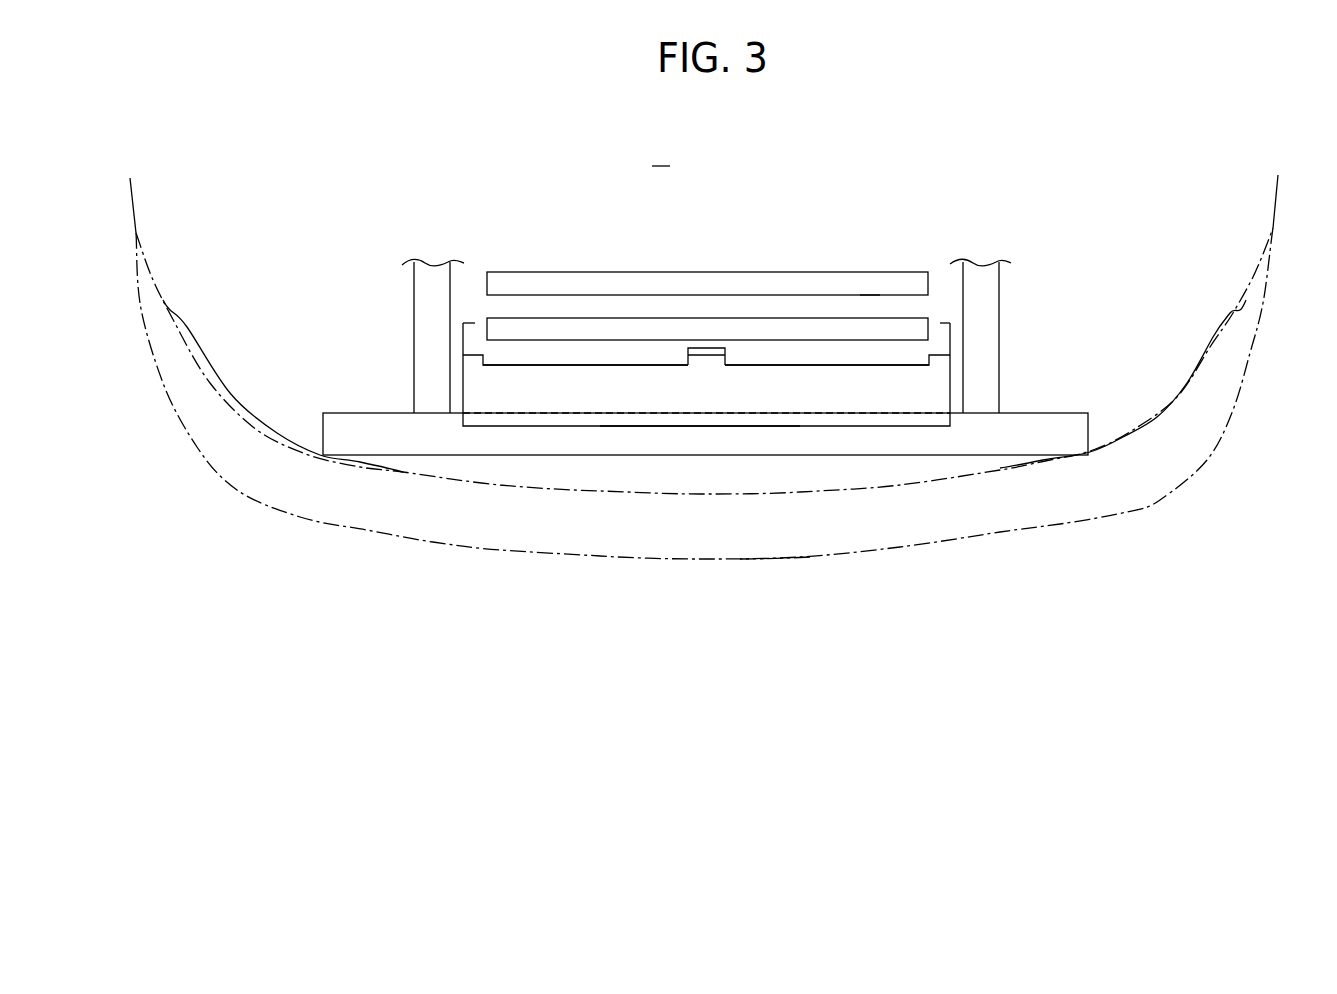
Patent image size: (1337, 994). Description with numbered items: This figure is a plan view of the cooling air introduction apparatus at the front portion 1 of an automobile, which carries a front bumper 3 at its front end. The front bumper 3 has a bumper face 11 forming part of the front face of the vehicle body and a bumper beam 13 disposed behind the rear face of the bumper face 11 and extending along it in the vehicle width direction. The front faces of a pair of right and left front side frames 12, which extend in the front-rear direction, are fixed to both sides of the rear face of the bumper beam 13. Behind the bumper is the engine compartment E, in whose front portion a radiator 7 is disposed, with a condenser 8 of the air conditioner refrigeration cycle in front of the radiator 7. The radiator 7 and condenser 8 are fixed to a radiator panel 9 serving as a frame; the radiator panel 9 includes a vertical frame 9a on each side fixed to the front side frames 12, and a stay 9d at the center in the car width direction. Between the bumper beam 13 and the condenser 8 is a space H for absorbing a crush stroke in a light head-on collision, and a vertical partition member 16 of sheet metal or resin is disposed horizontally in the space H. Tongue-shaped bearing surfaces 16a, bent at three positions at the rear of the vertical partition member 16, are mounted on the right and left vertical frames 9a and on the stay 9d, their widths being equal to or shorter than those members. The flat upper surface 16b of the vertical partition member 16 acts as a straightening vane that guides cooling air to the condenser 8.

The front portion 1 is at (1263, 535).
The front bumper 3 is at (1110, 526).
The radiator 7 is at (813, 285).
The condenser 8 is at (615, 328).
The radiator panel 9 is at (943, 310).
The vertical frame 9a is at (462, 338).
The stay 9d is at (703, 348).
The bumper face 11 is at (810, 557).
The front side frame 12 is at (420, 290).
The bumper beam 13 is at (427, 428).
The vertical partition member 16 is at (572, 427).
The bearing surface 16a is at (485, 357).
The upper surface 16b is at (683, 387).
The space H is at (865, 352).
The engine compartment E is at (661, 154).